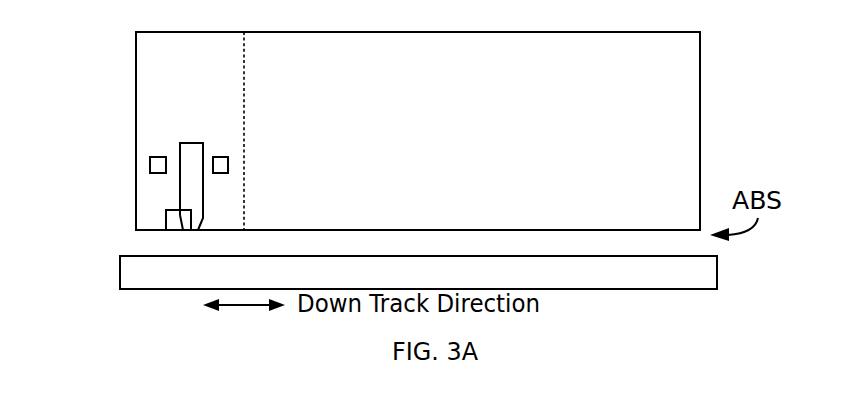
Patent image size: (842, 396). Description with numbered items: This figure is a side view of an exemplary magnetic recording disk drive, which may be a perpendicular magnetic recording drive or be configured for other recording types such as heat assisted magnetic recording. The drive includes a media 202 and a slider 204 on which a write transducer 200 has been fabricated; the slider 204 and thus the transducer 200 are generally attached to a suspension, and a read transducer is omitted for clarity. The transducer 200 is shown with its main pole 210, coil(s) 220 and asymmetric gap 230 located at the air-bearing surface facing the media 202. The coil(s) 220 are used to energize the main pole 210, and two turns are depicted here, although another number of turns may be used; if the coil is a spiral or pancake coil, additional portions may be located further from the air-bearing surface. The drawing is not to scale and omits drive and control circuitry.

The transducer 200 is at (398, 128).
The media 202 is at (120, 287).
The slider 204 is at (700, 98).
The main pole 210 is at (180, 143).
The coil 220 is at (212, 156).
The asymmetric gap 230 is at (174, 231).